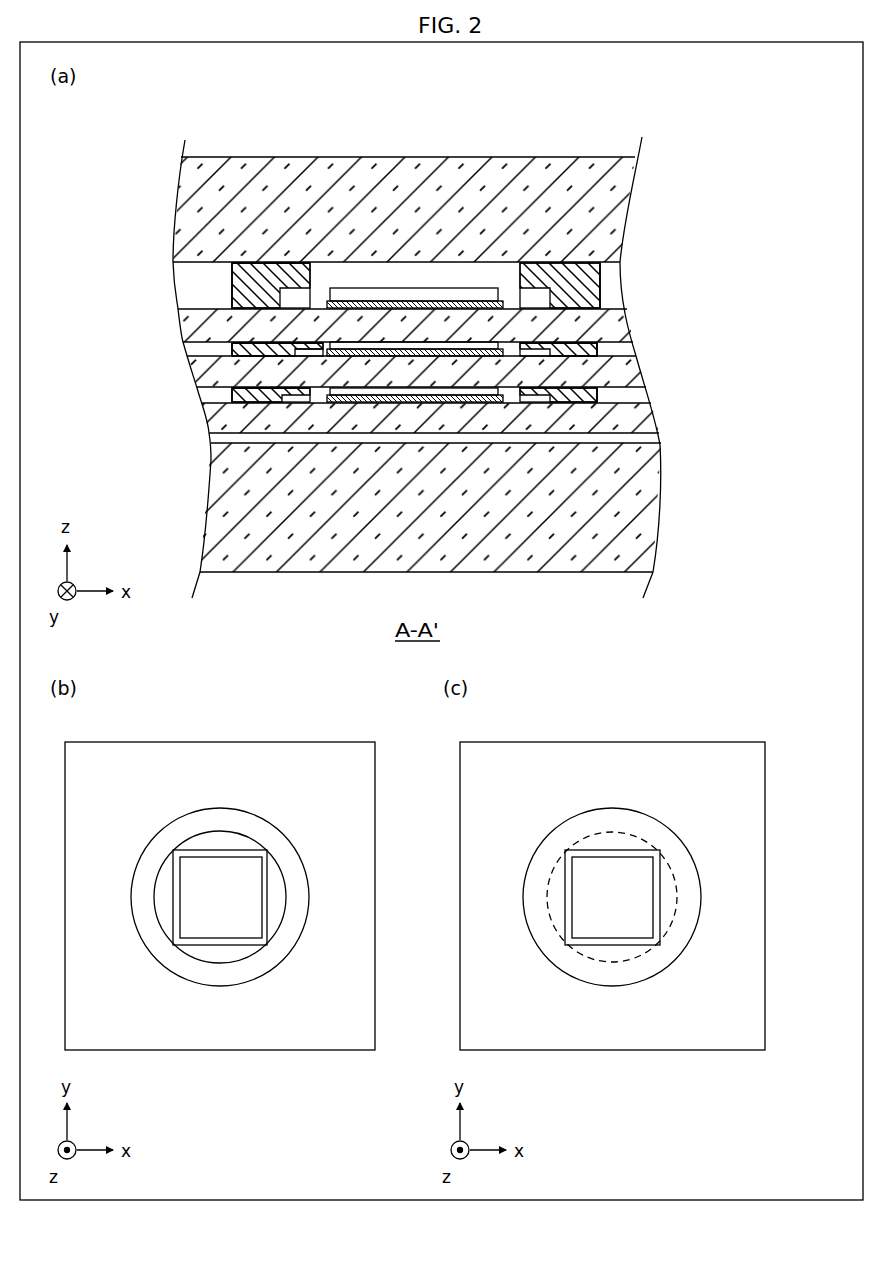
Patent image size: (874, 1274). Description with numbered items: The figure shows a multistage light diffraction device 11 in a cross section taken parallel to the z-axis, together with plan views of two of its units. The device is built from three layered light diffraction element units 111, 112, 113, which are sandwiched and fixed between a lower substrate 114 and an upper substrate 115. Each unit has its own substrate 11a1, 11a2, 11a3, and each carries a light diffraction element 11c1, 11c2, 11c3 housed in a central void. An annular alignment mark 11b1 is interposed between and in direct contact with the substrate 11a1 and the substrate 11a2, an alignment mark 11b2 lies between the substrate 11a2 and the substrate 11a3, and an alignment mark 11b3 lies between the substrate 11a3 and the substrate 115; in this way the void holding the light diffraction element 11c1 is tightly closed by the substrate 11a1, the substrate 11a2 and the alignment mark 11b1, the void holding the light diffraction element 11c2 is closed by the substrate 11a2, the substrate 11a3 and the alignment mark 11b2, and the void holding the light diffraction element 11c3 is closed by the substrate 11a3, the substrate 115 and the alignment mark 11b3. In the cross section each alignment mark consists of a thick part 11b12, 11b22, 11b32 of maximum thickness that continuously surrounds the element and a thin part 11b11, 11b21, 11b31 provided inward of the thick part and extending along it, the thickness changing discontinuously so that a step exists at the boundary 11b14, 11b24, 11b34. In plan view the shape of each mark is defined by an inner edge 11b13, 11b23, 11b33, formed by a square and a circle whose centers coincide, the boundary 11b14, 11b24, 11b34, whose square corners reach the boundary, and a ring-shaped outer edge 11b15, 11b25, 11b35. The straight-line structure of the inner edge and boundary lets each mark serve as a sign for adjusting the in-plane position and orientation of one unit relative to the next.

The multistage light diffraction device 11 is at (635, 102).
The light diffraction element unit 111 is at (742, 407).
The light diffraction element unit 112 is at (732, 360).
The light diffraction element unit 113 is at (718, 306).
The substrate 114 is at (660, 503).
The substrate 115 is at (624, 206).
The substrate 11a1 is at (655, 422).
The substrate 11a2 is at (645, 375).
The substrate 11a3 is at (628, 320).
The alignment mark 11b1 is at (598, 398).
The alignment mark 11b2 is at (598, 351).
The alignment mark 11b3 is at (600, 291).
The thin part 11b11 is at (540, 395).
The thick part 11b12 is at (600, 394).
The inner edge 11b13 is at (308, 394).
The boundary 11b14 is at (295, 393).
The outer edge 11b15 is at (232, 394).
The thin part 11b21 is at (526, 348).
The thick part 11b22 is at (570, 347).
The inner edge 11b23 is at (312, 350).
The boundary 11b24 is at (302, 352).
The outer edge 11b25 is at (236, 348).
The thin part 11b31 is at (540, 278).
The thick part 11b32 is at (590, 292).
The inner edge 11b33 is at (308, 294).
The boundary 11b34 is at (297, 290).
The outer edge 11b35 is at (232, 291).
The light diffraction element 11c1 is at (391, 388).
The light diffraction element 11c2 is at (433, 342).
The light diffraction element 11c3 is at (470, 288).